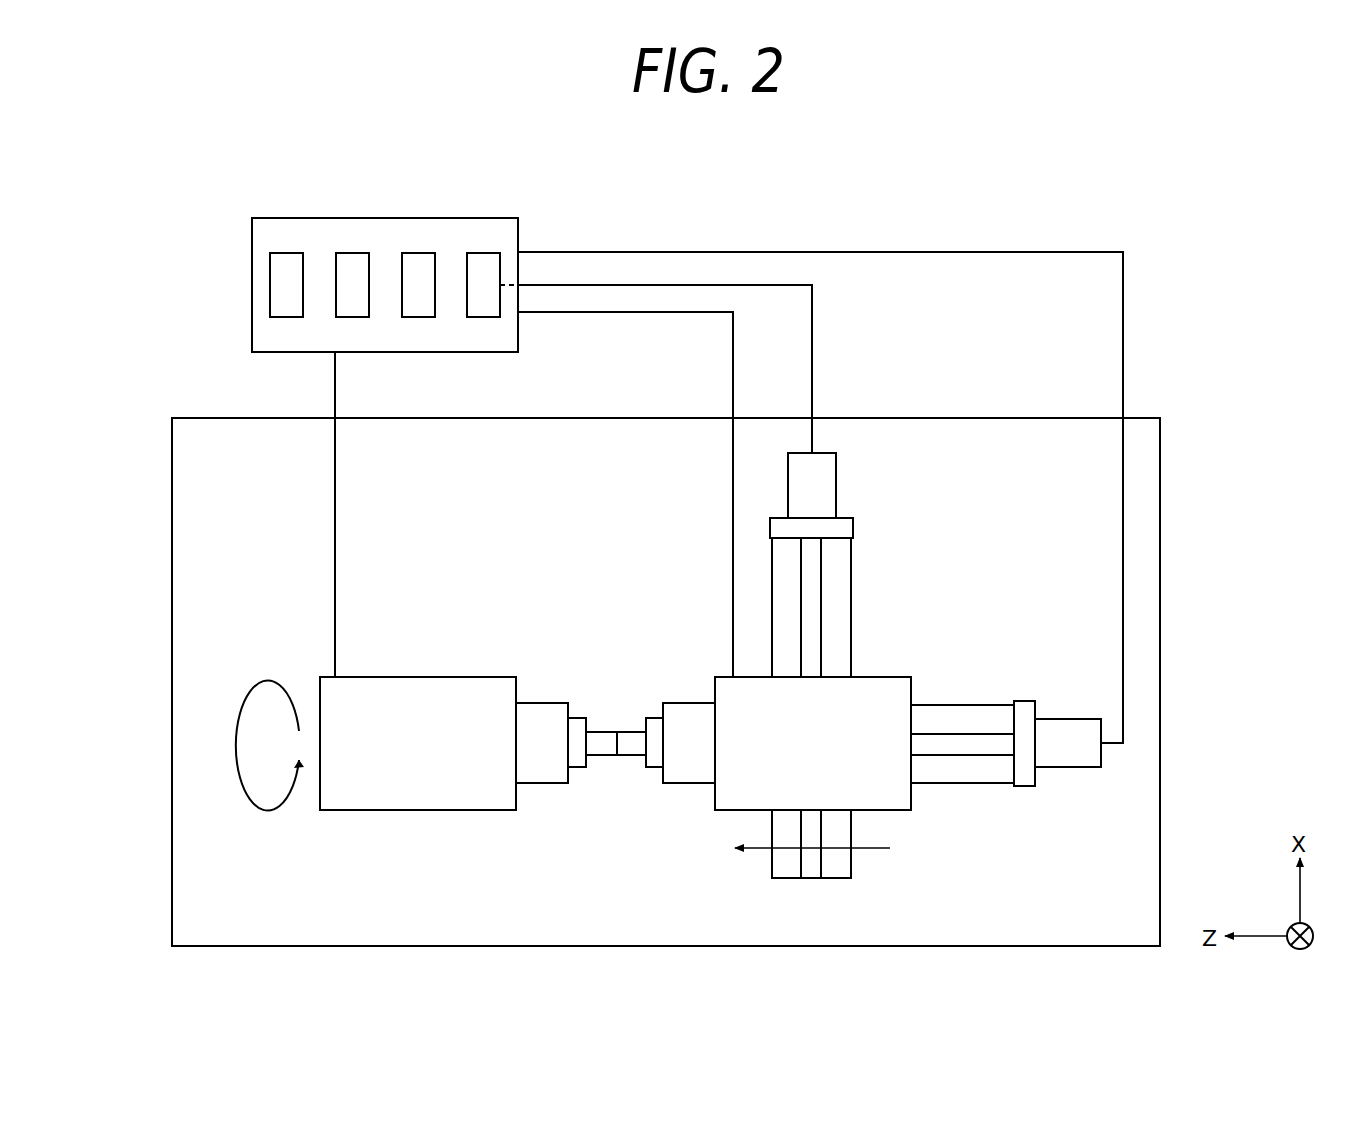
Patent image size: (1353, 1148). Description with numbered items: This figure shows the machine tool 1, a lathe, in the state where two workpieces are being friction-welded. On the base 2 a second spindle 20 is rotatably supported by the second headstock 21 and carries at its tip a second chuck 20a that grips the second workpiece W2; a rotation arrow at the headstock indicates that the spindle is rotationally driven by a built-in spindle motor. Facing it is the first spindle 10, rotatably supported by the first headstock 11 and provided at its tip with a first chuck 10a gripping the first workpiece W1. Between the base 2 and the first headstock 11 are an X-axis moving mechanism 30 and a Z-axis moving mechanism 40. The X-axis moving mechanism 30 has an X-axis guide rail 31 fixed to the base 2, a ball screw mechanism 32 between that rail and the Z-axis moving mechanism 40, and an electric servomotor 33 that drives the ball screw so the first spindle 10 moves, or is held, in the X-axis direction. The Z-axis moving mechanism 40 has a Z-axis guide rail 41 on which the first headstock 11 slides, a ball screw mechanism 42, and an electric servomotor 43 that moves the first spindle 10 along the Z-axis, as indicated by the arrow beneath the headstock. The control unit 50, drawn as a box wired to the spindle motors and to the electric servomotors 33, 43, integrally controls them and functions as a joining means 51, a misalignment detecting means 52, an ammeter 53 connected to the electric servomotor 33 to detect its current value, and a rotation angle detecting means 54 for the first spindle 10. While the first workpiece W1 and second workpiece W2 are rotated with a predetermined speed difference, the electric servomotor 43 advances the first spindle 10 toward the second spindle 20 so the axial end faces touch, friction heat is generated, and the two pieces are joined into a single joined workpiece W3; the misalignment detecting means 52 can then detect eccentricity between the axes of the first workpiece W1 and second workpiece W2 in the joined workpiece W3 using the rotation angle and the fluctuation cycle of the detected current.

The machine tool 1 is at (1224, 258).
The base 2 is at (192, 604).
The first spindle 10 is at (677, 786).
The first chuck 10a is at (650, 726).
The first headstock 11 is at (893, 798).
The second spindle 20 is at (548, 786).
The second chuck 20a is at (580, 723).
The second headstock 21 is at (420, 782).
The X-axis moving mechanism 30 is at (868, 565).
The X-axis guide rail 31 is at (838, 653).
The ball screw mechanism 32 is at (812, 622).
The electric servomotor 33 is at (822, 490).
The Z-axis moving mechanism 40 is at (1006, 747).
The Z-axis guide rail 41 is at (958, 772).
The ball screw mechanism 42 is at (991, 757).
The electric servomotor 43 is at (1067, 753).
The control unit 50 is at (448, 216).
The joining means 51 is at (418, 260).
The misalignment detecting means 52 is at (354, 260).
The ammeter 53 is at (486, 260).
The rotation angle detecting means 54 is at (287, 260).
The first workpiece W1 is at (630, 762).
The second workpiece W2 is at (598, 762).
The joined workpiece W3 is at (615, 730).